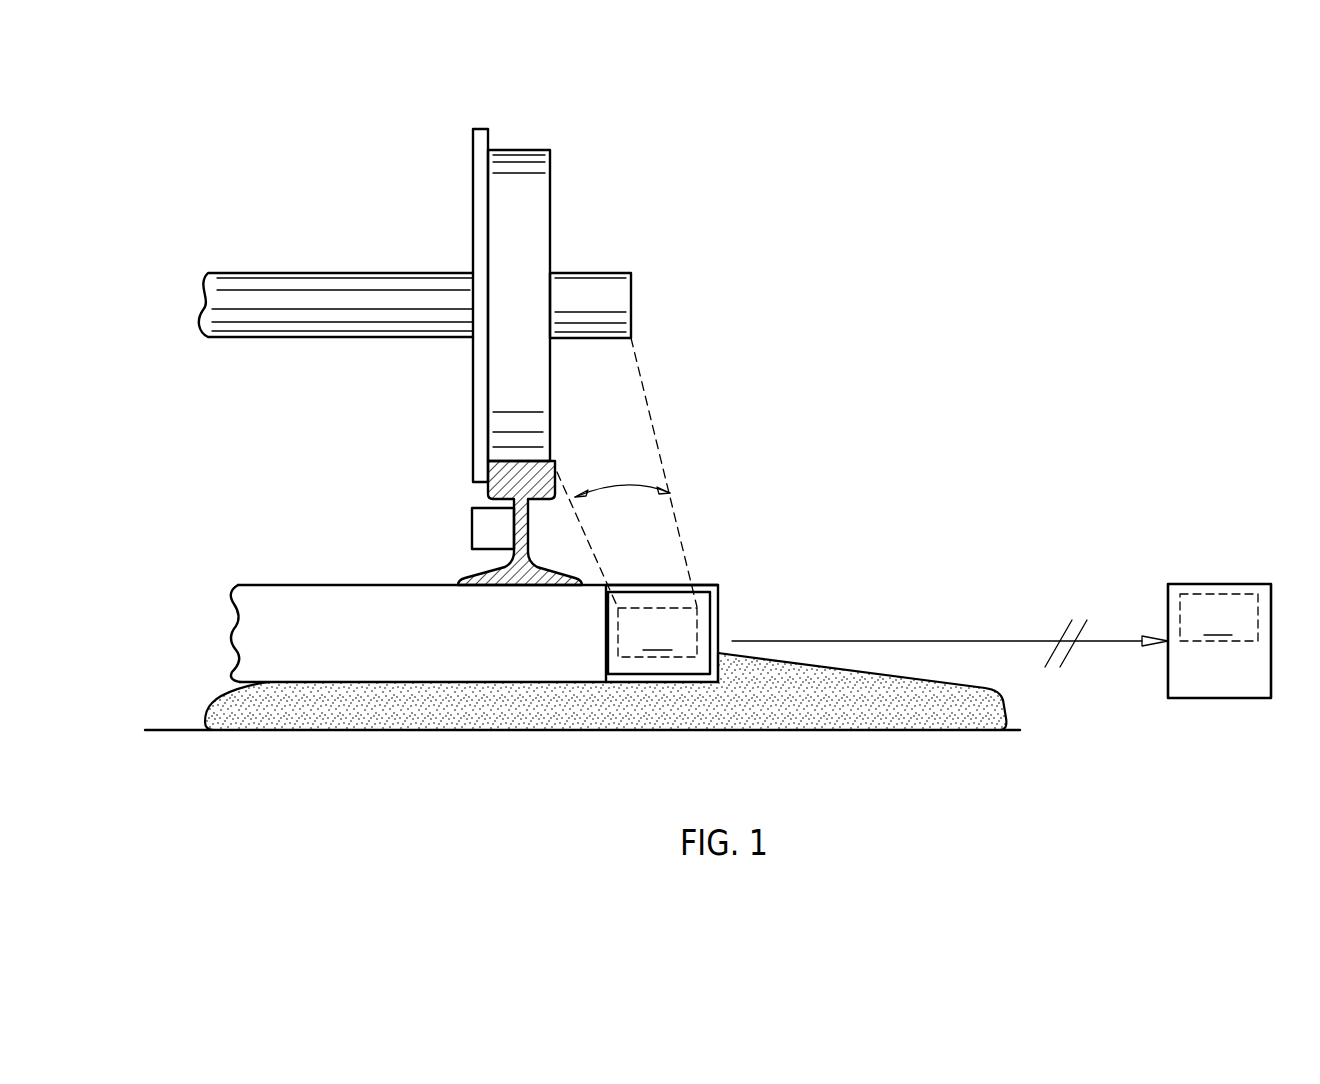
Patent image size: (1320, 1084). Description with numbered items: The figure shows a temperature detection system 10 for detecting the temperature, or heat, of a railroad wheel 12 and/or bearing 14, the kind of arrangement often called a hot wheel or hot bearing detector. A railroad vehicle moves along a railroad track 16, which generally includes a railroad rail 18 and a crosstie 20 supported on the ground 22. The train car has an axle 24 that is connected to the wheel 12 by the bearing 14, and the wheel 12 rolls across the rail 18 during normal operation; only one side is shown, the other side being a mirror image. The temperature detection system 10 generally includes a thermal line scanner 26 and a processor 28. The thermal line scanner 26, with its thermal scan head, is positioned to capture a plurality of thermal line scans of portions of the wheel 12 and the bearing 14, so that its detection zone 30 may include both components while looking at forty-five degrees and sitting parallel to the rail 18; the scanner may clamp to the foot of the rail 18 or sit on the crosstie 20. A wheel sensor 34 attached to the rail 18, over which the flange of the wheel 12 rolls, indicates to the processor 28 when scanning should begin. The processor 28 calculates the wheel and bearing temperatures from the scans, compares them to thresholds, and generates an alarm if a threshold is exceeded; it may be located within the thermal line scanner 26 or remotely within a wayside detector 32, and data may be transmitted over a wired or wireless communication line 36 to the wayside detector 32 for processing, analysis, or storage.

The temperature detection system 10 is at (735, 205).
The railroad wheel 12 is at (551, 185).
The bearing 14 is at (632, 283).
The railroad track 16 is at (215, 485).
The railroad rail 18 is at (512, 507).
The crosstie 20 is at (718, 590).
The ground 22 is at (458, 732).
The axle 24 is at (352, 338).
The thermal line scanner 26 is at (605, 672).
The processor 28 is at (938, 625).
The detection zone 30 is at (637, 487).
The wayside detector 32 is at (1188, 698).
The wheel sensor 34 is at (472, 530).
The communication line 36 is at (1015, 642).